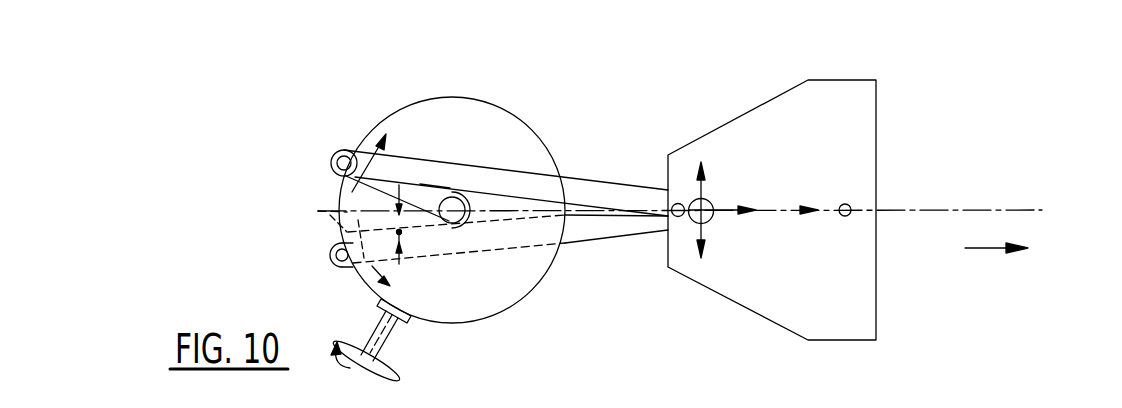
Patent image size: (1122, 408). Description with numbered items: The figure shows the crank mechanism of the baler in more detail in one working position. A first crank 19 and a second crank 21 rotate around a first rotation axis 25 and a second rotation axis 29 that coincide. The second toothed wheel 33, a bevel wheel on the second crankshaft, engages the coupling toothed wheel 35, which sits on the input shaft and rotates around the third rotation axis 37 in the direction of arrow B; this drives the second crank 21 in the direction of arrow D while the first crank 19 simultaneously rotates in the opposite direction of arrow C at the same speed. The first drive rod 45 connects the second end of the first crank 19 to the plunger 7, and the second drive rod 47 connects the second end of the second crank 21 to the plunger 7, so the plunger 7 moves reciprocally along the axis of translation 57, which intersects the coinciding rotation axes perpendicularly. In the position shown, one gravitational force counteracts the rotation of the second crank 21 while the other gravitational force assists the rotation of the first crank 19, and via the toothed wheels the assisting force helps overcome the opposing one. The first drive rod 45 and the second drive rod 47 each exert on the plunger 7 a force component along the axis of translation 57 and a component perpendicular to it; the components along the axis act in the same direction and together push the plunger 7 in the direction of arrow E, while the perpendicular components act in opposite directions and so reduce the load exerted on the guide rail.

The plunger 7 is at (773, 117).
The first crank 19 is at (320, 212).
The second crank 21 is at (434, 198).
The first rotation axis 25 is at (485, 245).
The second rotation axis 29 is at (467, 212).
The second toothed wheel 33 is at (530, 150).
The coupling toothed wheel 35 is at (422, 321).
The third rotation axis 37 is at (356, 376).
The first drive rod 45 is at (586, 232).
The second drive rod 47 is at (594, 195).
The axis of translation 57 is at (983, 210).